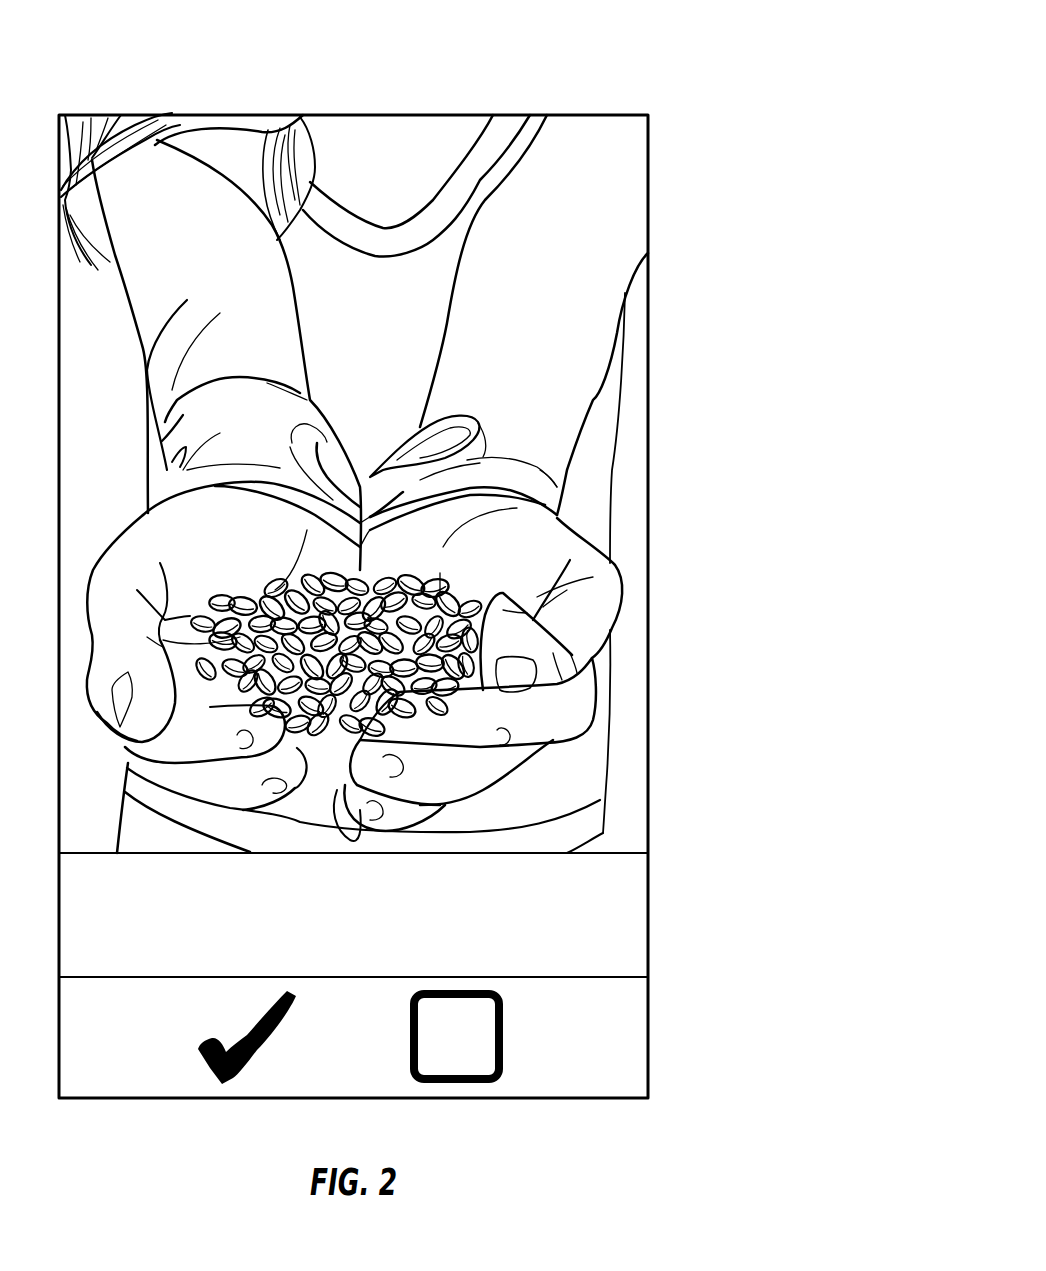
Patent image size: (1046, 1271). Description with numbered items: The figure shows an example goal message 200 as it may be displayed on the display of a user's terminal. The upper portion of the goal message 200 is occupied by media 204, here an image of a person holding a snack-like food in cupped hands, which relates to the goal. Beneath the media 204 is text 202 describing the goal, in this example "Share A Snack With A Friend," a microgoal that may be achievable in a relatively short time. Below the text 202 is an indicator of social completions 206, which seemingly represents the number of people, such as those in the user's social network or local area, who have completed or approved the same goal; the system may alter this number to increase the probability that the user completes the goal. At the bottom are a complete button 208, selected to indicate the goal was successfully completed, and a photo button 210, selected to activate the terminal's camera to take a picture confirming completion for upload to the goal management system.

The goal message 200 is at (648, 72).
The text 202 is at (636, 892).
The media 204 is at (633, 803).
The social completions 206 is at (500, 938).
The complete button 208 is at (215, 1072).
The photo button 210 is at (505, 1072).